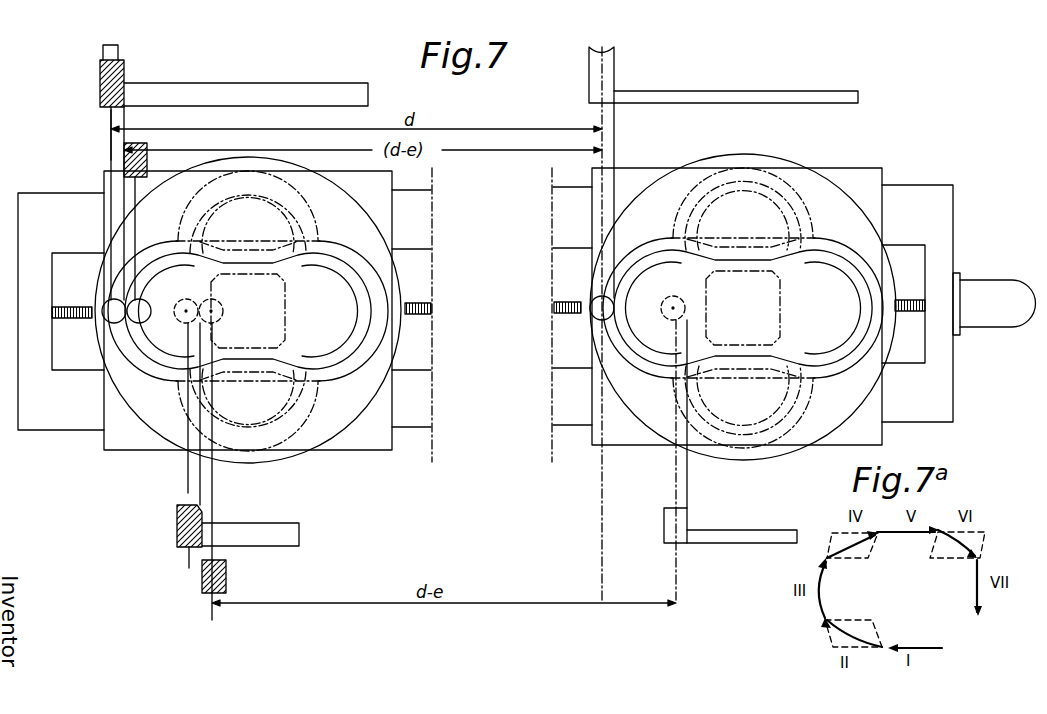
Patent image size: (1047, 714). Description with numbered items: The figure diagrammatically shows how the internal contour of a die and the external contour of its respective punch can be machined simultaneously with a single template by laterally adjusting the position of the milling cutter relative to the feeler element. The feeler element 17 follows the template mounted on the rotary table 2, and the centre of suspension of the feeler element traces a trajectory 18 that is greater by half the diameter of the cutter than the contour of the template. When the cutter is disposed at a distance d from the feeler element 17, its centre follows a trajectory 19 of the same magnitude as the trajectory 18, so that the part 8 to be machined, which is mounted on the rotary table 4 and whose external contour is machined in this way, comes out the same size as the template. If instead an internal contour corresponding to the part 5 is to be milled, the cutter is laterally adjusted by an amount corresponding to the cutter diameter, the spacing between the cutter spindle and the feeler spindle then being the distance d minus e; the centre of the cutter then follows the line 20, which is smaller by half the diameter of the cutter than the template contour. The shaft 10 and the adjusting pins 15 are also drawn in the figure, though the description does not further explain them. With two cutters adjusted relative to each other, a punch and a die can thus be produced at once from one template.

The rotary table 2 is at (820, 431).
The rotary table 4 is at (165, 434).
The part 5 is at (788, 93).
The part to be machined 8 is at (326, 88).
The shaft 10 is at (994, 287).
The adjusting pins 15 is at (104, 72).
The feeler element 17 is at (612, 69).
The trajectory 18 is at (646, 241).
The trajectory 19 is at (351, 259).
The line 20 is at (344, 272).